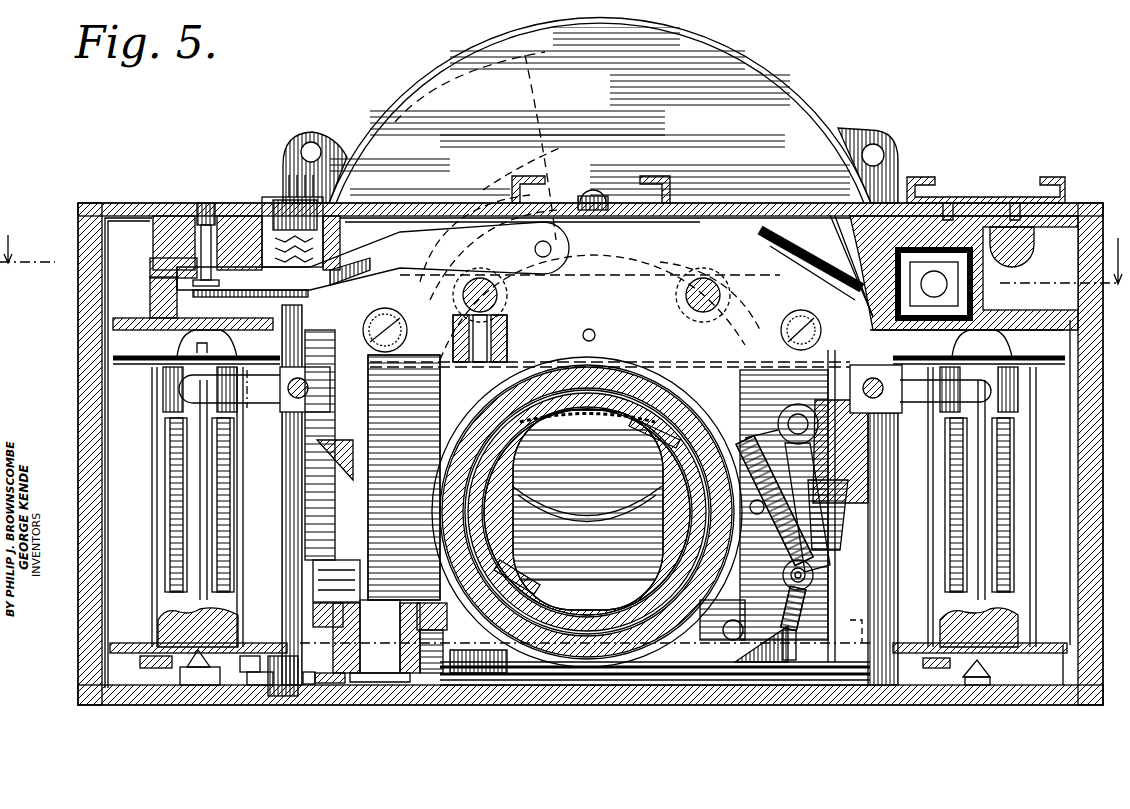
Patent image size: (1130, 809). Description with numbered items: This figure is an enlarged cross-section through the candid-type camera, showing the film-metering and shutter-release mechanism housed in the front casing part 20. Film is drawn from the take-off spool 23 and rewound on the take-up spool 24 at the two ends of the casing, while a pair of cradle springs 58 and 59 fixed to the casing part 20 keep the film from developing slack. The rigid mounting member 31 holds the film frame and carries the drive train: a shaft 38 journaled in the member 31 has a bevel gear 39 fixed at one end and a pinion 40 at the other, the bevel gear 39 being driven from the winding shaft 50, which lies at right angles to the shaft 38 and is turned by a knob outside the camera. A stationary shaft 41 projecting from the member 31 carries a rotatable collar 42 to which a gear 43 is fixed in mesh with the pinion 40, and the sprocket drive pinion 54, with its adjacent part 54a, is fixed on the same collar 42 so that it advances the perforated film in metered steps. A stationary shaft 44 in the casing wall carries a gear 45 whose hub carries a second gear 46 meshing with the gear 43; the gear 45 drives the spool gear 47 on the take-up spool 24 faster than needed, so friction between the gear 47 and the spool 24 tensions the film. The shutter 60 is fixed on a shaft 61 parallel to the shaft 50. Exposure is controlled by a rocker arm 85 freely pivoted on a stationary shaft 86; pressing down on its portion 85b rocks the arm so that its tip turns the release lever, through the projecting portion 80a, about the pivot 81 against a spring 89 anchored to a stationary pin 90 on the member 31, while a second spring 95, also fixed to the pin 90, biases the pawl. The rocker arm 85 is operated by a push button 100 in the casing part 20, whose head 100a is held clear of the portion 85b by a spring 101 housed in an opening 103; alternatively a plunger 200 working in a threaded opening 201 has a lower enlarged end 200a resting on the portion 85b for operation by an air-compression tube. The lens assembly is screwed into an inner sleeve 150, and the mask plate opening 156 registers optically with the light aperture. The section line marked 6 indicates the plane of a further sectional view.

The section line 6- 6 is at (561, 245).
The front casing part 20 is at (126, 700).
The take-off spool 23 is at (983, 503).
The take-up spool 24 is at (197, 452).
The mounting member 31 is at (338, 404).
The shaft 38 is at (500, 490).
The bevel gear 39 is at (450, 375).
The pinion 40 is at (510, 686).
The stationary shaft 41 is at (377, 660).
The collar 42 is at (342, 684).
The gear 43 is at (327, 685).
The stationary shaft 44 is at (290, 697).
The gear 45 is at (260, 686).
The second gear 46 is at (252, 673).
The spool gear 47 is at (163, 669).
The shaft 50 is at (463, 232).
The sprocket drive pinion 54 is at (342, 602).
The block extension 54a is at (313, 613).
The cradle spring 58 is at (920, 398).
The cradle spring 59 is at (262, 404).
The shutter 60 is at (537, 95).
The shaft 61 is at (589, 329).
The projecting portion of release lever 80a is at (798, 426).
The pivot 81 is at (833, 488).
The rocker arm 85 is at (410, 248).
The rocker arm portion 85b is at (175, 320).
The stationary shaft 86 is at (544, 241).
The spring 89 is at (778, 570).
The stationary pin 90 is at (812, 573).
The spring 95 is at (807, 612).
The push button 100 is at (262, 220).
The head of button 100a is at (284, 152).
The spring 101 is at (273, 197).
The opening 103 is at (330, 265).
The inner sleeve 150 is at (660, 438).
The opening 156 is at (663, 492).
The plunger 200 is at (183, 215).
The lower enlarged end of plunger 200a is at (165, 272).
The opening 201 is at (205, 207).